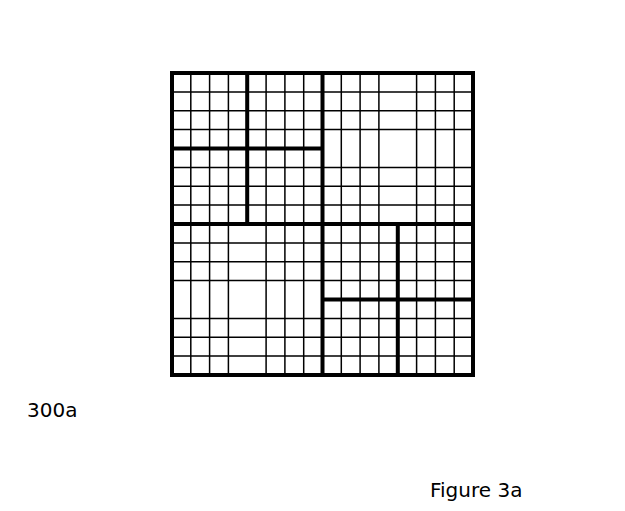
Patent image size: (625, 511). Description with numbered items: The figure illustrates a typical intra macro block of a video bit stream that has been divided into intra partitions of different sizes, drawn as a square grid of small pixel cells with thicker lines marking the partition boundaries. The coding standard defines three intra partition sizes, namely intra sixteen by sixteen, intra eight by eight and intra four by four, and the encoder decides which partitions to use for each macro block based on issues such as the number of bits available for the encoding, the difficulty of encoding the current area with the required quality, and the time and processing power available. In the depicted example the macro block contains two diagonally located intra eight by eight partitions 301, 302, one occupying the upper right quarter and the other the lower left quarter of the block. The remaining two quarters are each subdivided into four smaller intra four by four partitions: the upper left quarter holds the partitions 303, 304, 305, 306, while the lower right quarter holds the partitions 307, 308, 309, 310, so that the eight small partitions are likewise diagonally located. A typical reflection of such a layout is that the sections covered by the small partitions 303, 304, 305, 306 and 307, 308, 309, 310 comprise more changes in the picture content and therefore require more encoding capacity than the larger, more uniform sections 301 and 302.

The intra_8x8 partition 301 is at (473, 158).
The intra_8x8 partition 302 is at (172, 300).
The intra_4x4 partition 303 is at (172, 187).
The intra_4x4 partition 304 is at (172, 112).
The intra_4x4 partition 305 is at (290, 73).
The intra_4x4 partition 306 is at (285, 180).
The intra_4x4 partition 307 is at (473, 267).
The intra_4x4 partition 308 is at (473, 350).
The intra_4x4 partition 309 is at (378, 375).
The intra_4x4 partition 310 is at (353, 282).